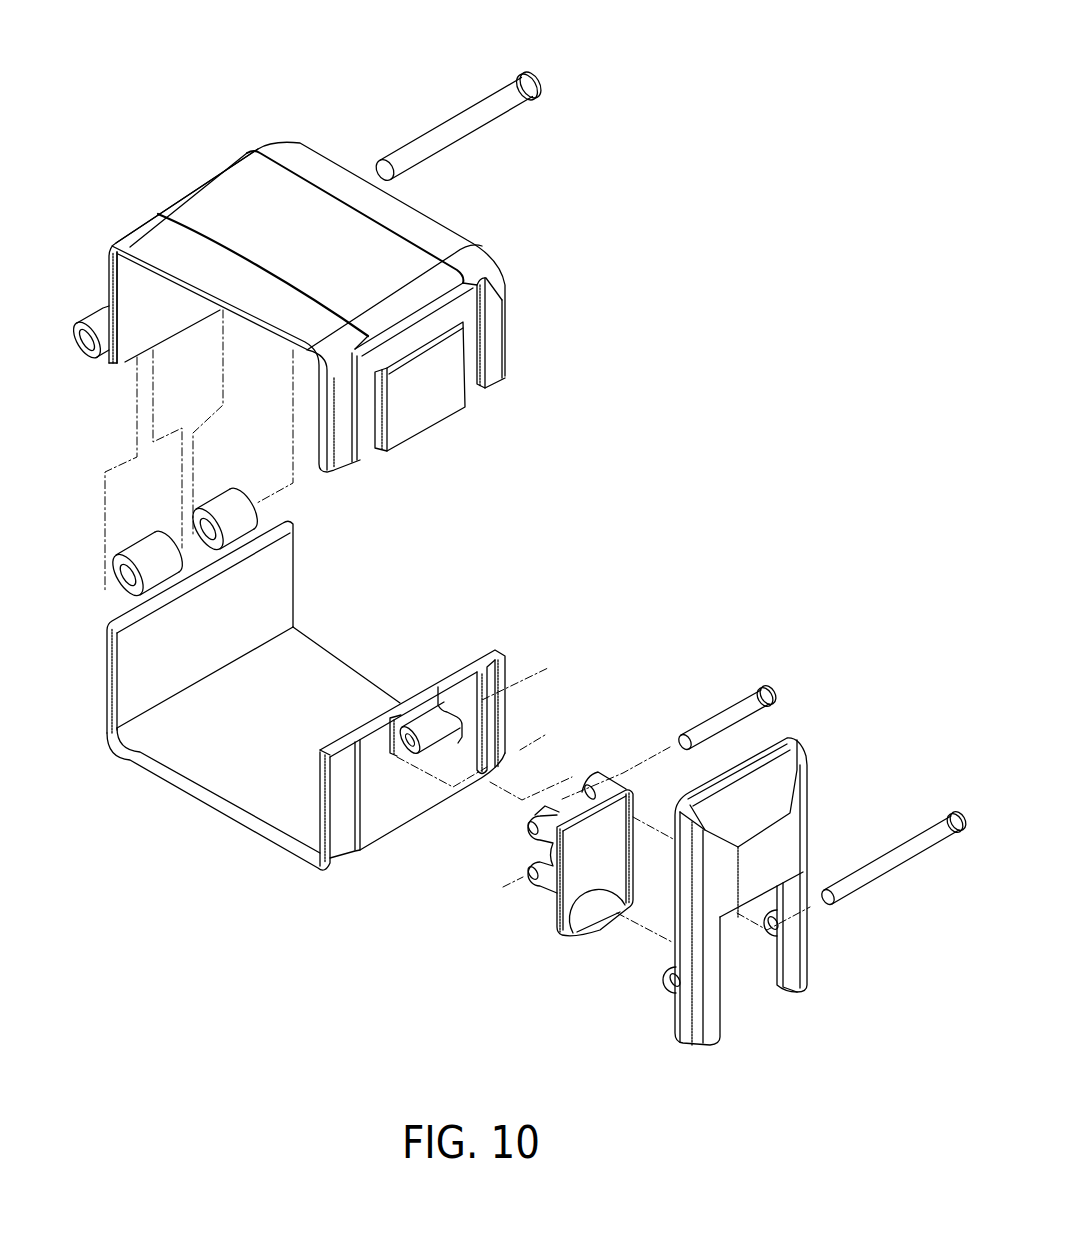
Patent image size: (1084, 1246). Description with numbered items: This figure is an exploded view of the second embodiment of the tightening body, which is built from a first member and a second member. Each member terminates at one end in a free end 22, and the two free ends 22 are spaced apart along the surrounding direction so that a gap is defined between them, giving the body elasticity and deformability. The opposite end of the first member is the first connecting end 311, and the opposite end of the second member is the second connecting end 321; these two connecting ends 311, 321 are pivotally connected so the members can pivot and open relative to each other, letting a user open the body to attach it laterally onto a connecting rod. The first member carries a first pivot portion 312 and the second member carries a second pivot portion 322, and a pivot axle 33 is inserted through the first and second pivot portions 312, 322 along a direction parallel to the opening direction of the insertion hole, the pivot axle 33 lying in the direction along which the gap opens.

The free end 22 is at (493, 352).
The pivot axle 33 is at (487, 106).
The first connecting end 311 is at (132, 322).
The first pivot portion 312 is at (103, 310).
The second connecting end 321 is at (158, 663).
The second pivot portion 322 is at (150, 557).